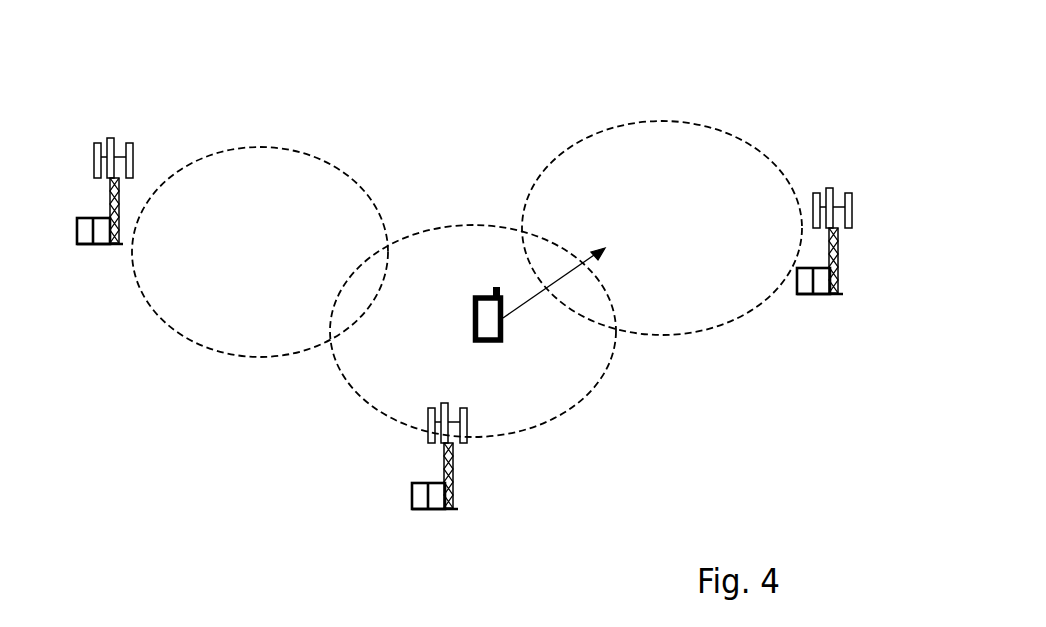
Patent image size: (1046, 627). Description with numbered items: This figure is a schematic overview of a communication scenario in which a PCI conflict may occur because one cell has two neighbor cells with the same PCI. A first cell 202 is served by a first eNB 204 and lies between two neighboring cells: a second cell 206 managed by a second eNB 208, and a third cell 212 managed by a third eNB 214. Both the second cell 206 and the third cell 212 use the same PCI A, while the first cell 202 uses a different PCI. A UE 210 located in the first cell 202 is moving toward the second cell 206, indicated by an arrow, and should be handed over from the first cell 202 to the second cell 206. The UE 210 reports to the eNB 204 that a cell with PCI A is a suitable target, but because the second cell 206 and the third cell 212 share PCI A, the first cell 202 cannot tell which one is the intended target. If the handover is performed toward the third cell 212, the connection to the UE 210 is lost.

The first cell 202 is at (448, 227).
The first eNB 204 is at (412, 487).
The second cell 206 is at (673, 122).
The second eNB 208 is at (838, 188).
The UE 210 is at (492, 343).
The third cell 212 is at (260, 148).
The third eNB 214 is at (110, 138).